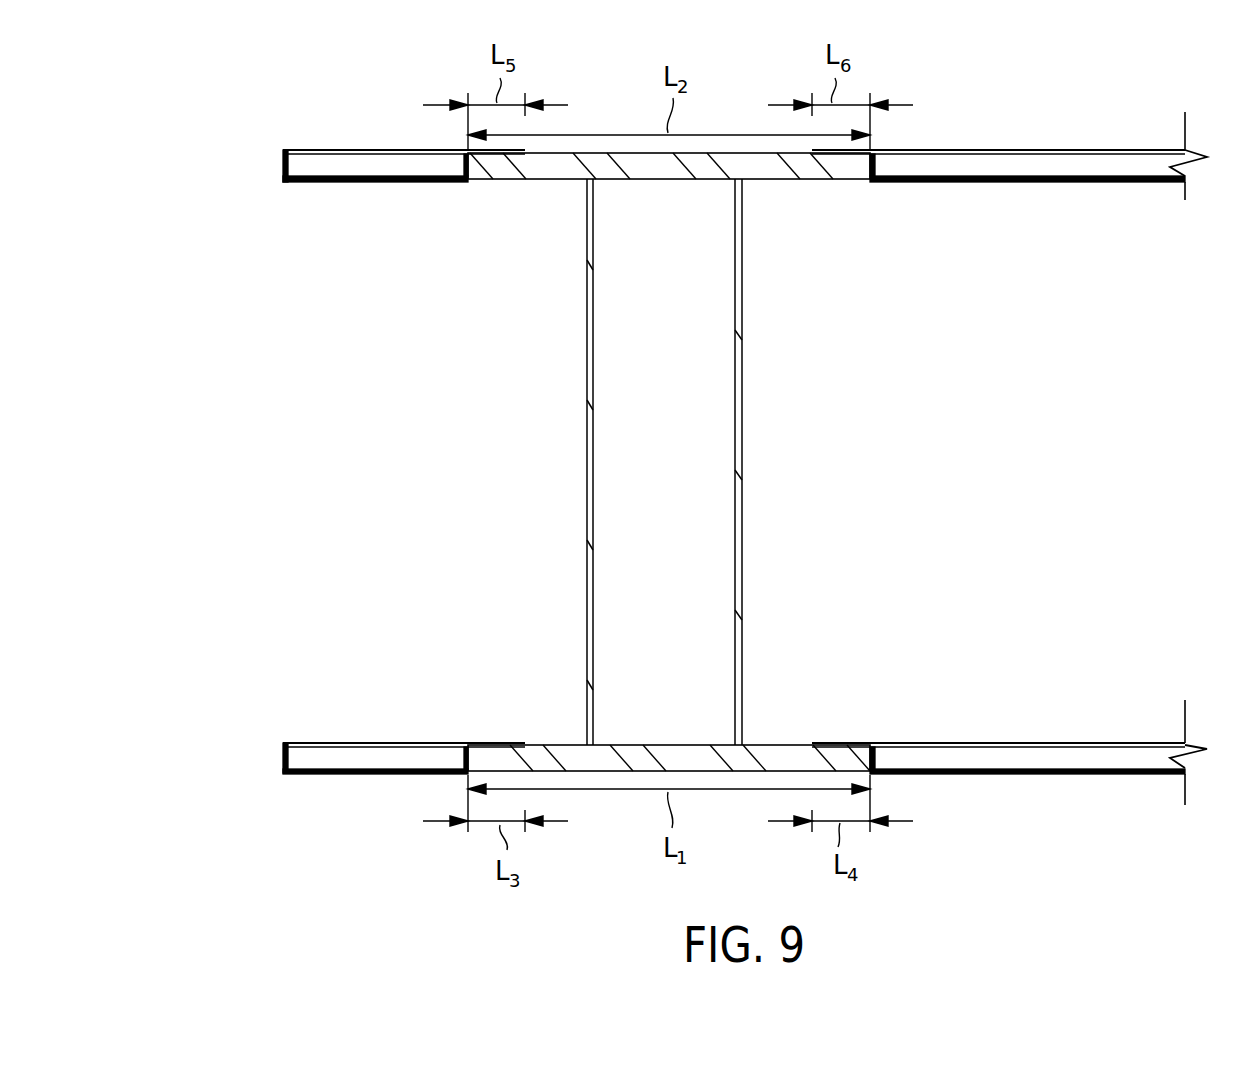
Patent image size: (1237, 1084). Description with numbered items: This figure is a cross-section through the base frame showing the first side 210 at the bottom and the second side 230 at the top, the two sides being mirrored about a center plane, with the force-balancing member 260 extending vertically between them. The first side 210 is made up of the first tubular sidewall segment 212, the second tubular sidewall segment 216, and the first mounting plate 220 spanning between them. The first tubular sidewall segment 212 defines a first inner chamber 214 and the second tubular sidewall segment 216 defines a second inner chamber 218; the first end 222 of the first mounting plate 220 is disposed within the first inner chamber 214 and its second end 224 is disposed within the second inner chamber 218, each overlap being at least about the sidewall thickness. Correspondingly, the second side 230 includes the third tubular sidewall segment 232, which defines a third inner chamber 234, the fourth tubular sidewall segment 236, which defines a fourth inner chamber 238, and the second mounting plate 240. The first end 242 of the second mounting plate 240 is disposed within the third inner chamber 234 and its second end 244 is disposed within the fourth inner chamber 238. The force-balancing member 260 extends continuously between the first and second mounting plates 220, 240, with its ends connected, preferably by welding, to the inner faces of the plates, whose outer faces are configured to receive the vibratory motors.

The first side 210 is at (670, 759).
The first tubular sidewall segment 212 is at (410, 775).
The first inner chamber 214 is at (325, 760).
The second tubular sidewall segment 216 is at (1108, 775).
The second inner chamber 218 is at (1032, 760).
The first mounting plate 220 is at (578, 757).
The first end of the first mounting plate 222 is at (467, 745).
The second end of the first mounting plate 224 is at (885, 745).
The second side 230 is at (691, 165).
The third tubular sidewall segment 232 is at (355, 150).
The third inner chamber 234 is at (332, 158).
The fourth tubular sidewall segment 236 is at (1048, 148).
The fourth inner chamber 238 is at (1080, 166).
The second mounting plate 240 is at (758, 165).
The first end of the second mounting plate 242 is at (460, 172).
The second end of the second mounting plate 244 is at (873, 183).
The force-balancing member 260 is at (670, 412).